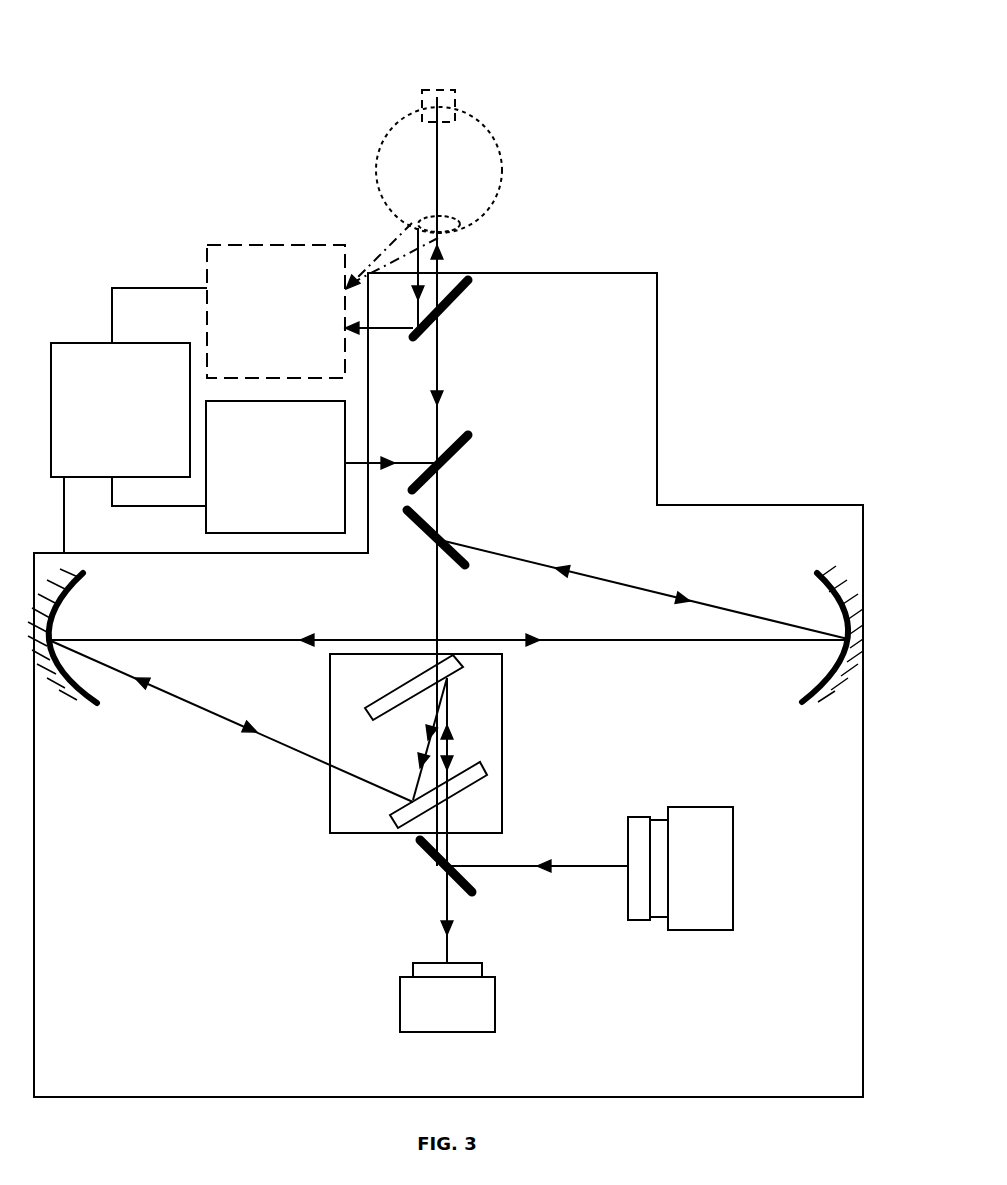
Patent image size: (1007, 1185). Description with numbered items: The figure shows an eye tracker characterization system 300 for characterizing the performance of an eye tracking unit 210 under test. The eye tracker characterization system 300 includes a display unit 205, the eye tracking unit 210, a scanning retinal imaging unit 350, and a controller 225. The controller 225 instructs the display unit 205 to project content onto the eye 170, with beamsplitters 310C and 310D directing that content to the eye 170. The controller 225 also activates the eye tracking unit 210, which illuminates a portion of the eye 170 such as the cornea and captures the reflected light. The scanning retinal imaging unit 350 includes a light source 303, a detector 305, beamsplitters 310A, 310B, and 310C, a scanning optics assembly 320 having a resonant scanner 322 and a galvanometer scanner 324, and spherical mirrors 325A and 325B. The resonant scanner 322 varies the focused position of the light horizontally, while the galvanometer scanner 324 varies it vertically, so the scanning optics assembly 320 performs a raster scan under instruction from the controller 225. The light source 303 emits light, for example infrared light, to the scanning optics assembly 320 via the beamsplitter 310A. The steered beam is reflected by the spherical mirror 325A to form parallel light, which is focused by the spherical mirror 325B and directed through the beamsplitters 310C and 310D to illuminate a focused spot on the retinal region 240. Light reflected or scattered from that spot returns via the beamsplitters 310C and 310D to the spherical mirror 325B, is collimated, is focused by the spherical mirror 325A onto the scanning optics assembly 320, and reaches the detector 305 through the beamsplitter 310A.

The eye tracker characterization system 300 is at (448, 552).
The retinal region 240 is at (440, 97).
The eye 170 is at (480, 165).
The eye tracking unit 210 is at (228, 375).
The beamsplitter 310D is at (452, 312).
The scanning retinal imaging unit 350 is at (660, 373).
The controller 225 is at (120, 448).
The display unit 205 is at (275, 467).
The beamsplitter 310C is at (450, 466).
The beamsplitter 310B is at (425, 535).
The spherical mirror 325A is at (825, 580).
The spherical mirror 325B is at (80, 590).
The resonant scanner 322 is at (458, 673).
The galvanometer scanner 324 is at (490, 777).
The scanning optics assembly 320 is at (318, 798).
The beamsplitter 310A is at (443, 875).
The light source 303 is at (720, 832).
The detector 305 is at (447, 1010).